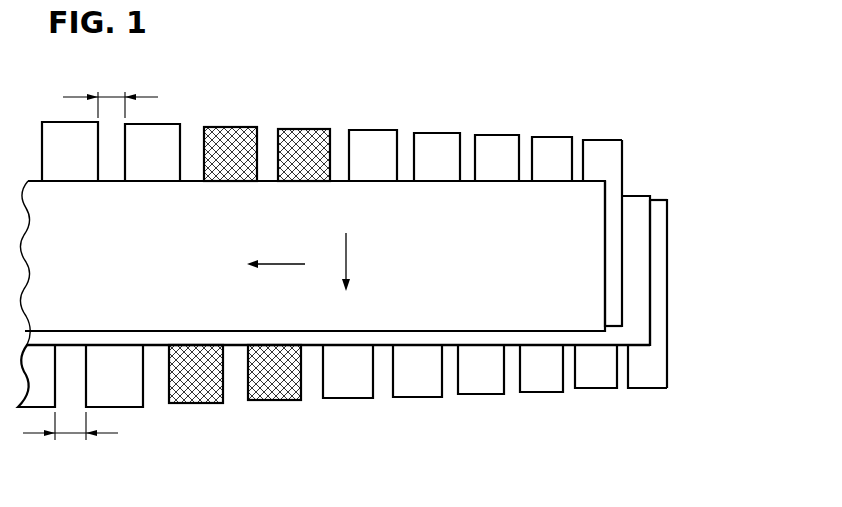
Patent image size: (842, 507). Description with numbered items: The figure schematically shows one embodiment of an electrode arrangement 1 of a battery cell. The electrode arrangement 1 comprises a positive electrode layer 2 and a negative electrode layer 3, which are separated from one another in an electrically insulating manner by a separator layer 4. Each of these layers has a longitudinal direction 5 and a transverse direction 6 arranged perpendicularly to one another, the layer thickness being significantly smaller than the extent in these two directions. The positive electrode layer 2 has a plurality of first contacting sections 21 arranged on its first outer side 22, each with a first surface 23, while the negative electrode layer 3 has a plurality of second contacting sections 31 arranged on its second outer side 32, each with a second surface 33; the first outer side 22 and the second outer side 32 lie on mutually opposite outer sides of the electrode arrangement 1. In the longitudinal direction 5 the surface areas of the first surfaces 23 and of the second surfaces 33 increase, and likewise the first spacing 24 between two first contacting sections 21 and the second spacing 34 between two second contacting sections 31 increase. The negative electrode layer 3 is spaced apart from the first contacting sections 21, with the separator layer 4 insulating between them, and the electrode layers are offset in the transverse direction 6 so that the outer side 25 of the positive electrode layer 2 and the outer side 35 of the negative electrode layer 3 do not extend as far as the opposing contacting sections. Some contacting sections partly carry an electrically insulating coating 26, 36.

The electrode arrangement 1 is at (677, 120).
The positive electrode layer 2 is at (613, 220).
The negative electrode layer 3 is at (660, 270).
The separator layer 4 is at (582, 248).
The longitudinal direction 5 is at (283, 262).
The transverse direction 6 is at (348, 257).
The first contacting section 21 is at (551, 153).
The first outer side 22 is at (372, 112).
The first surface 23 is at (433, 152).
The first spacing 24 is at (112, 95).
The outer side 25 is at (612, 326).
The electrically insulating coating 26 is at (300, 129).
The second contacting section 31 is at (596, 372).
The second outer side 32 is at (349, 415).
The second surface 33 is at (411, 370).
The second spacing 34 is at (71, 436).
The outer side 35 is at (660, 197).
The electrically insulating coating 36 is at (268, 385).